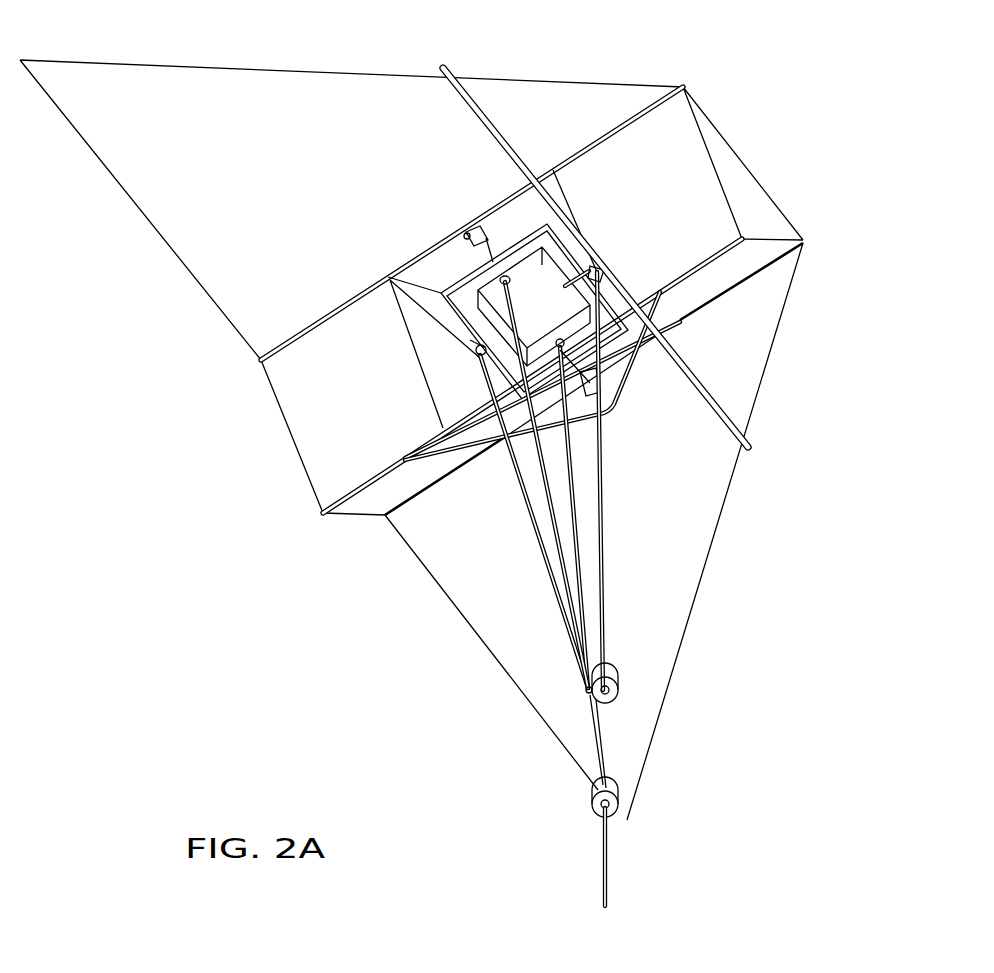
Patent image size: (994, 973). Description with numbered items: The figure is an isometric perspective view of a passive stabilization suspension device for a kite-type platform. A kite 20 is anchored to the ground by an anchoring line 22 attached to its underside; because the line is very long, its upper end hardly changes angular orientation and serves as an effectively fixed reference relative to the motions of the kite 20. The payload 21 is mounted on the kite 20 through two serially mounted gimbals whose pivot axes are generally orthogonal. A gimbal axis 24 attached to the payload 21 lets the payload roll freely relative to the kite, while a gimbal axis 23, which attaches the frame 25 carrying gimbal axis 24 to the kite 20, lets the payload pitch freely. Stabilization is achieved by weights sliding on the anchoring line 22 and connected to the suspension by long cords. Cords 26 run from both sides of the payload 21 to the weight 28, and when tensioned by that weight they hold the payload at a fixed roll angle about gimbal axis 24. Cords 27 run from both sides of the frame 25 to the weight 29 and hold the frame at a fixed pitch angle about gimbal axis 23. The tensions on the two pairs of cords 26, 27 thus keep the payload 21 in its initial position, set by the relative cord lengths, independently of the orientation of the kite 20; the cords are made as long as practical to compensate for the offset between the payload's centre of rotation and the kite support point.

The kite 20 is at (578, 84).
The payload 21 is at (553, 332).
The anchoring line 22 is at (608, 878).
The gimbal axis 23 is at (470, 238).
The gimbal axis 24 is at (478, 356).
The frame 25 is at (452, 292).
The cords 26 is at (577, 532).
The cords 27 is at (615, 745).
The weight 28 is at (622, 668).
The weight 29 is at (590, 795).